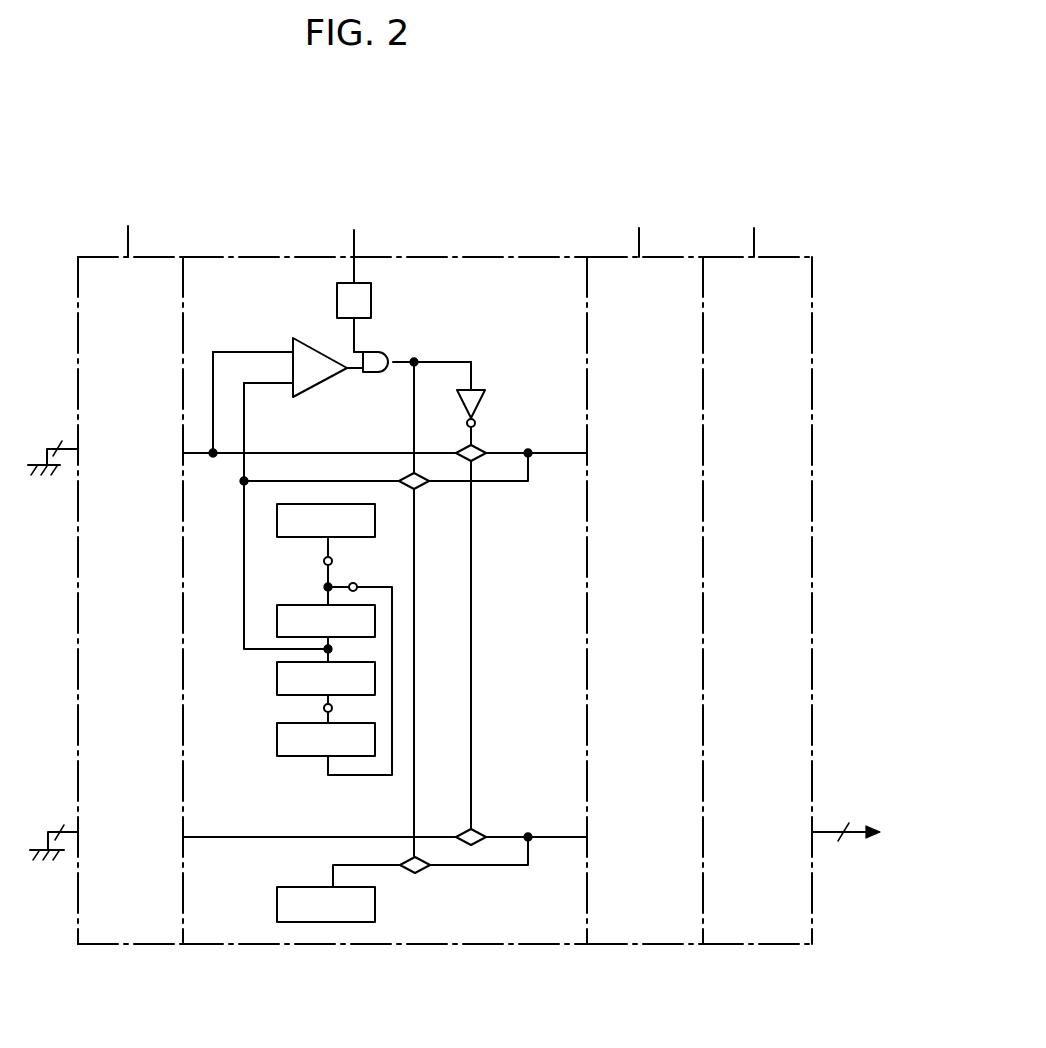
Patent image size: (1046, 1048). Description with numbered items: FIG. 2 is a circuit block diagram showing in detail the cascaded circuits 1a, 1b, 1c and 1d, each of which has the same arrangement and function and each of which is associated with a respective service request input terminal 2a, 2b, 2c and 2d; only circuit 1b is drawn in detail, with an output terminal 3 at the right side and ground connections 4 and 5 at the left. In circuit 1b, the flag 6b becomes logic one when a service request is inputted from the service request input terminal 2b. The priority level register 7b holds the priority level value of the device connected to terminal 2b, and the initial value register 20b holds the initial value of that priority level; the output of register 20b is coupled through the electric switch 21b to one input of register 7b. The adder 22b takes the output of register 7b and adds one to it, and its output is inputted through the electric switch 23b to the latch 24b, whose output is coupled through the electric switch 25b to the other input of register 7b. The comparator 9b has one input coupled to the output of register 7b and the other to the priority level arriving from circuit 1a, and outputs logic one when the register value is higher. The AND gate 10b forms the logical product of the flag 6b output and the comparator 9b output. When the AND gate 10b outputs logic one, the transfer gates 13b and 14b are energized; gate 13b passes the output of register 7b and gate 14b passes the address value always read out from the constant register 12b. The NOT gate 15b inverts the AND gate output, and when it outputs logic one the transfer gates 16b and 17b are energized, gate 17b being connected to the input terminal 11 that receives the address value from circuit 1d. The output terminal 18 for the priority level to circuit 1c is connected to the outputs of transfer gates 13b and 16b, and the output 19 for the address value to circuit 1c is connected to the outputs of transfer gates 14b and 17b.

The circuit 1a is at (115, 947).
The circuit 1b is at (277, 947).
The circuit 1c is at (615, 947).
The circuit 1d is at (730, 947).
The service request input terminal 2a is at (130, 240).
The service request input terminal 2b is at (356, 240).
The service request input terminal 2c is at (641, 240).
The service request input terminal 2d is at (756, 240).
The output terminal 3 is at (851, 842).
The ground connection 4 is at (70, 836).
The ground connection 5 is at (64, 450).
The flag 6b is at (372, 300).
The priority level register 7b is at (277, 620).
The comparator 9b is at (300, 338).
The AND gate 10b is at (385, 350).
The input terminal 11 is at (216, 836).
The constant register 12b is at (375, 905).
The transfer gate 13b is at (418, 490).
The transfer gate 14b is at (420, 874).
The NOT gate 15b is at (486, 402).
The transfer gate 16b is at (486, 446).
The transfer gate 17b is at (484, 831).
The output terminal 18 is at (196, 456).
The output 19 is at (558, 841).
The initial value register 20b is at (298, 538).
The electric switch 21b is at (333, 561).
The adder 22b is at (277, 678).
The electric switch 23b is at (323, 709).
The latch 24b is at (287, 757).
The electric switch 25b is at (357, 586).